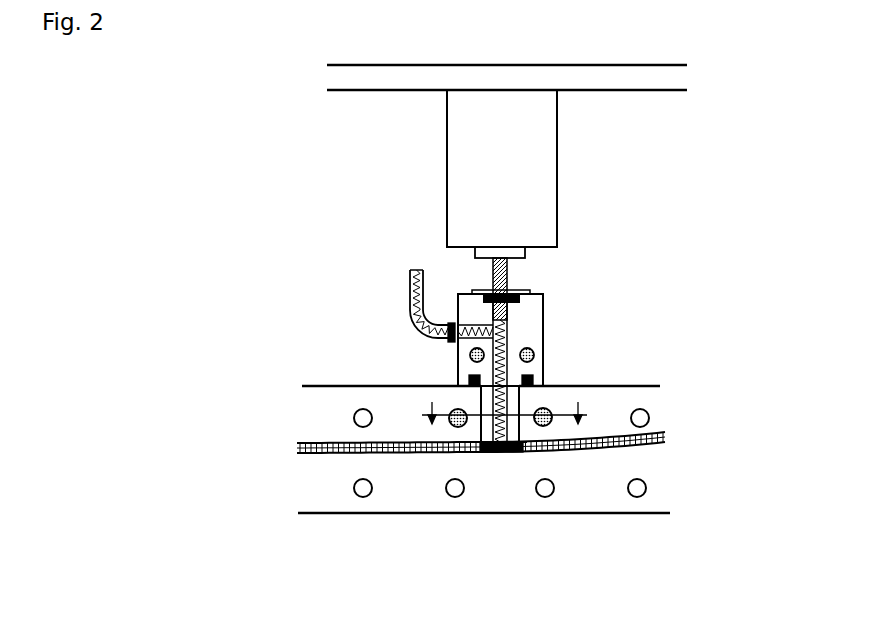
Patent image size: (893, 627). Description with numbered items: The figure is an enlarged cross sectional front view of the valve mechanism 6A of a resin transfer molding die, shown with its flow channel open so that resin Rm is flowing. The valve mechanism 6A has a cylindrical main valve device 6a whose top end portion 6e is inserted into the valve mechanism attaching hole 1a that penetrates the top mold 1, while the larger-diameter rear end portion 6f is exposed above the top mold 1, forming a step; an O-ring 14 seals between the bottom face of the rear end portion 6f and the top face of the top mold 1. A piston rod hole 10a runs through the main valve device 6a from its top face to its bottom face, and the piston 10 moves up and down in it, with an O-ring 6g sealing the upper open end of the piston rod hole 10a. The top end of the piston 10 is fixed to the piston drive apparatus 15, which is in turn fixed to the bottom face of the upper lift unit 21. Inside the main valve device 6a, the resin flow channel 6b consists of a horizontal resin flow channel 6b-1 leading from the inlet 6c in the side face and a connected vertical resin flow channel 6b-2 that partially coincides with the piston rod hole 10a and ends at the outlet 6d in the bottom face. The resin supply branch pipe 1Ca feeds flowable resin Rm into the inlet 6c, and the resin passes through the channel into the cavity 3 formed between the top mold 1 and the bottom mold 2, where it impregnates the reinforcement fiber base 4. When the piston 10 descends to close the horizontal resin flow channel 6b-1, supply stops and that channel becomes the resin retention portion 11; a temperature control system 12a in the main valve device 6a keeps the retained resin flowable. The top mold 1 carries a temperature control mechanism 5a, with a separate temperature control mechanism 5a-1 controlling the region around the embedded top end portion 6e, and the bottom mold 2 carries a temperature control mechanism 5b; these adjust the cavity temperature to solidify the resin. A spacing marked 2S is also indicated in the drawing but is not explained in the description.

The upper lift unit 21 is at (647, 88).
The piston drive apparatus 15 is at (558, 187).
The piston 10 is at (508, 280).
The piston rod hole 10a is at (490, 292).
The O-ring 6g is at (535, 290).
The valve mechanism 6A is at (545, 300).
The main valve device 6a is at (532, 325).
The resin flow channel 6b is at (520, 337).
The horizontal resin flow channel 6b-1 is at (475, 321).
The vertical resin flow channel 6b-2 is at (525, 423).
The inlet 6c is at (446, 338).
The outlet 6d is at (499, 447).
The top end portion 6e is at (522, 403).
The rear end portion 6f is at (510, 345).
The temperature control system 12a is at (534, 353).
The resin retention portion 11 is at (410, 288).
The resin supply branch pipe 1Ca is at (410, 289).
The resin Rm is at (412, 305).
The O-ring 14 is at (465, 378).
The top mold 1 is at (330, 392).
The valve mechanism attaching hole 1a is at (477, 427).
The temperature control mechanism 5a is at (355, 415).
The temperature control mechanism 5a-1 is at (445, 427).
The reinforcement fiber base 4 is at (297, 448).
The temperature control mechanism 5b is at (353, 485).
The bottom mold 2 is at (338, 505).
The cavity 3 is at (474, 445).
The spacing dimension 2S is at (504, 409).